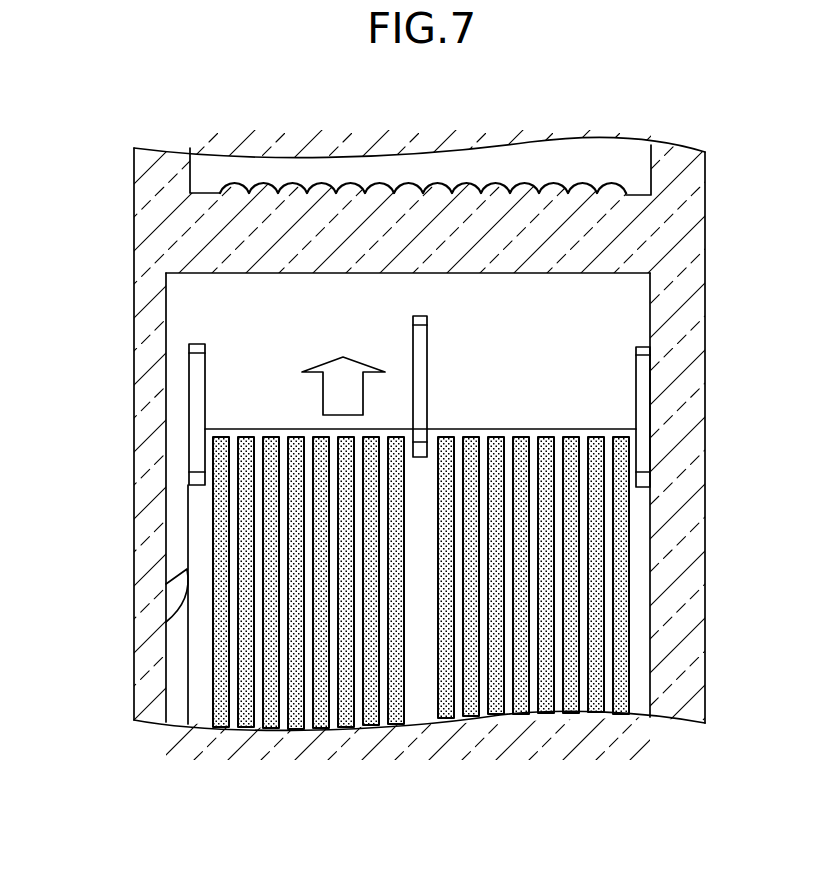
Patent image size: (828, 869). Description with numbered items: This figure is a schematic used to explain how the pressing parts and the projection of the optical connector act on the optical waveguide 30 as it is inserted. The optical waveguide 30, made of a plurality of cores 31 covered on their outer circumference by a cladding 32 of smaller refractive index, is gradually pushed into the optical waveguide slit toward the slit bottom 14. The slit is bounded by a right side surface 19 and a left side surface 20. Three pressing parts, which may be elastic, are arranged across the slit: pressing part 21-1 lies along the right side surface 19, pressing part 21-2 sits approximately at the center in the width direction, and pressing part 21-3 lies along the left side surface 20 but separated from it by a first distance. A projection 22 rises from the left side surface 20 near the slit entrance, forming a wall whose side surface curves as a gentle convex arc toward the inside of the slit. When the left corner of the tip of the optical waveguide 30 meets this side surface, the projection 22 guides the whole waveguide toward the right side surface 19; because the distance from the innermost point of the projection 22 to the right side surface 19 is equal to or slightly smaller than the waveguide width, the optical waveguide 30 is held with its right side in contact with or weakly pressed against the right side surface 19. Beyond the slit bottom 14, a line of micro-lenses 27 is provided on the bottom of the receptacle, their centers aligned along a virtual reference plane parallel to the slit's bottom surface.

The slit bottom 14 is at (583, 274).
The right side surface 19 is at (650, 603).
The left side surface 20 is at (168, 517).
The pressing part 21-1 is at (643, 412).
The pressing part 21-2 is at (423, 398).
The pressing part 21-3 is at (197, 411).
The projection 22 is at (178, 594).
The micro-lenses 27 is at (435, 192).
The optical waveguide 30 is at (535, 783).
The cores 31 is at (517, 702).
The cladding 32 is at (423, 697).